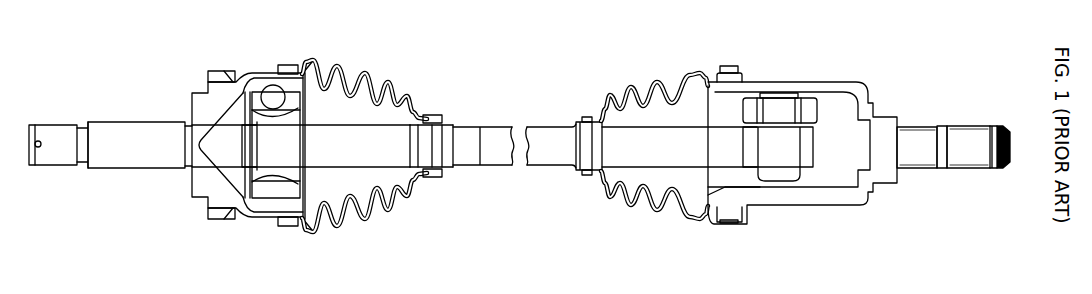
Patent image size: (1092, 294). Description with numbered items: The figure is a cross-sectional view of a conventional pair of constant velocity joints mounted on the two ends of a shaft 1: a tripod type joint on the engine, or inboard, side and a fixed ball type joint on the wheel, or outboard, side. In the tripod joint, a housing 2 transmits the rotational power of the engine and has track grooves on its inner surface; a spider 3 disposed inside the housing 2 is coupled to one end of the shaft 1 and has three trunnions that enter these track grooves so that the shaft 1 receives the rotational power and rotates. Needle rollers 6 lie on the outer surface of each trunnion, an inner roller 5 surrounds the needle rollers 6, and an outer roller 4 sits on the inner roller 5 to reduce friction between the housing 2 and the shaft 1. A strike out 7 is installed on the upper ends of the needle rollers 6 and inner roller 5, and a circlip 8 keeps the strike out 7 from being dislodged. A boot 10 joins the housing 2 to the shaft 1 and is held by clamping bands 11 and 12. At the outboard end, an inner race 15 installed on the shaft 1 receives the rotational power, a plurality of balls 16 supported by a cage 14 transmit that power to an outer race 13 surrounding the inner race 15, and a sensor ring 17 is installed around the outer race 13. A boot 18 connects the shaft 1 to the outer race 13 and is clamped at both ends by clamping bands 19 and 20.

The shaft 1 is at (498, 134).
The housing 2 is at (866, 96).
The spider 3 is at (789, 94).
The outer roller 4 is at (743, 108).
The inner roller 5 is at (757, 99).
The needle rollers 6 is at (765, 99).
The strike out 7 is at (806, 94).
The circlip 8 is at (800, 95).
The boot 10 is at (632, 90).
The clamping band 11 is at (727, 65).
The clamping band 12 is at (586, 116).
The outer race 13 is at (132, 124).
The cage 14 is at (313, 66).
The inner race 15 is at (313, 112).
The balls 16 is at (272, 85).
The sensor ring 17 is at (217, 70).
The boot 18 is at (392, 80).
The clamping band 19 is at (435, 113).
The clamping band 20 is at (291, 64).